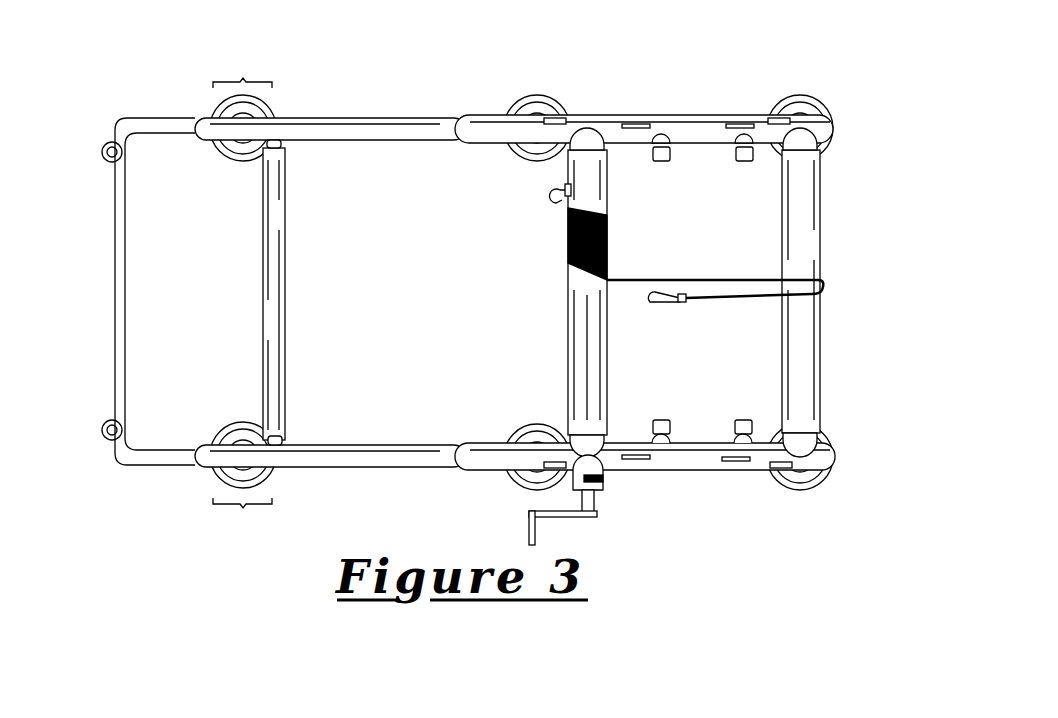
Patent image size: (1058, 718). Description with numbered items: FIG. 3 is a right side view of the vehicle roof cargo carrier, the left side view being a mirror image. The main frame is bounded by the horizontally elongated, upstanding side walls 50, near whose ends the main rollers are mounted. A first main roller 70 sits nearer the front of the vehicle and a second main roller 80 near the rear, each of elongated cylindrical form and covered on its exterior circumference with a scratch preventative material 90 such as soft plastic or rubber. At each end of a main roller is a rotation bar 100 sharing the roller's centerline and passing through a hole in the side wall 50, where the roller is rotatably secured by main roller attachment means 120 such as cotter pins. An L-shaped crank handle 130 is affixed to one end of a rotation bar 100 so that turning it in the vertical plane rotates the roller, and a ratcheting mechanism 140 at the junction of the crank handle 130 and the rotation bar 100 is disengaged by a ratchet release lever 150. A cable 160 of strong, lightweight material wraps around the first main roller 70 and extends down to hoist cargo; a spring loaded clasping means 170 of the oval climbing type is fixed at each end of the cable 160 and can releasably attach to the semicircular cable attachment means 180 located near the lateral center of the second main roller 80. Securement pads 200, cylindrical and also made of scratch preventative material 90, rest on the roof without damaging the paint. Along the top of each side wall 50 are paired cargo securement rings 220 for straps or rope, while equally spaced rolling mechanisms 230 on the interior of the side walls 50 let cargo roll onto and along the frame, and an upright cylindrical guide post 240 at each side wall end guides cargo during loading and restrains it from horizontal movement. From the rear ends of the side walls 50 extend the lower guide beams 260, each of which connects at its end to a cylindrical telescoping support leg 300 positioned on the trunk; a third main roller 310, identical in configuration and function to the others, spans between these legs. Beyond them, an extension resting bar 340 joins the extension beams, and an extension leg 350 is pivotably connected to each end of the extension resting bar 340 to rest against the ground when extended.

The side wall 50 is at (608, 115).
The first main roller 70 is at (822, 362).
The second main roller 80 is at (572, 332).
The scratch preventative material 90 is at (268, 104).
The rotation bar 100 is at (832, 146).
The main roller attachment means 120 is at (575, 516).
The crank handle 130 is at (528, 527).
The ratcheting mechanism 140 is at (604, 490).
The ratchet release lever 150 is at (604, 479).
The cable 160 is at (650, 279).
The spring loaded clasping means 170 is at (553, 200).
The cable attachment means 180 is at (565, 186).
The securement pad 200 is at (218, 112).
The cargo securement ring 220 is at (728, 124).
The rolling mechanism 230 is at (742, 162).
The guide post 240 is at (560, 118).
The lower guide beam 260 is at (352, 118).
The telescoping support leg 300 is at (242, 293).
The third main roller 310 is at (268, 286).
The extension resting bar 340 is at (114, 300).
The extension leg 350 is at (128, 156).